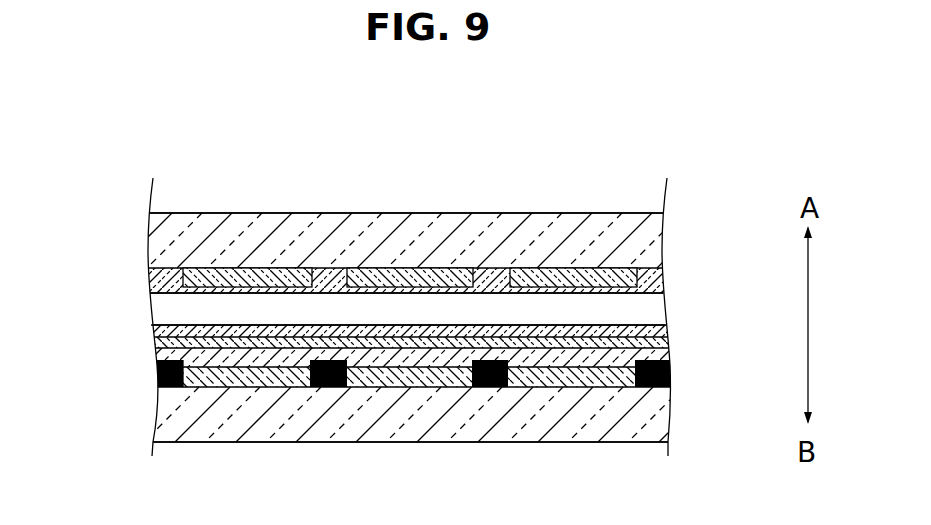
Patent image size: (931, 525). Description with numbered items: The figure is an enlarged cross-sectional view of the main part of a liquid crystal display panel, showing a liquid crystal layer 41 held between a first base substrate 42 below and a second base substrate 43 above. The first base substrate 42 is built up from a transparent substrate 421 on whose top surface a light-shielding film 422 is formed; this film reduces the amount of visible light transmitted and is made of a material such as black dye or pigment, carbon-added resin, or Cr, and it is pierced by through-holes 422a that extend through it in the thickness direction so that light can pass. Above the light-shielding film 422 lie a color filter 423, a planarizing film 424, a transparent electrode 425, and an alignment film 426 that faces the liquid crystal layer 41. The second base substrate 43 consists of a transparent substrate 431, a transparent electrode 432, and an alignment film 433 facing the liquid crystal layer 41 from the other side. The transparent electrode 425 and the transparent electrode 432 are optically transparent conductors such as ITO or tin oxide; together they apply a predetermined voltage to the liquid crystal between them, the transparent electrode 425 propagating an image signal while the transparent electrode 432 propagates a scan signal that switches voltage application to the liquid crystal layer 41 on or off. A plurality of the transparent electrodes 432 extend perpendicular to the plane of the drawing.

The liquid crystal layer 41 is at (175, 307).
The first base substrate 42 is at (523, 443).
The second base substrate 43 is at (524, 211).
The transparent substrate 421 is at (650, 410).
The light-shielding film 422 is at (158, 379).
The through-hole 422a is at (205, 375).
The color filter 423 is at (412, 377).
The planarizing film 424 is at (667, 356).
The transparent electrode 425 is at (173, 343).
The alignment film 426 is at (652, 329).
The transparent substrate 431 is at (652, 238).
The transparent electrode 432 is at (178, 280).
The alignment film 433 is at (655, 283).